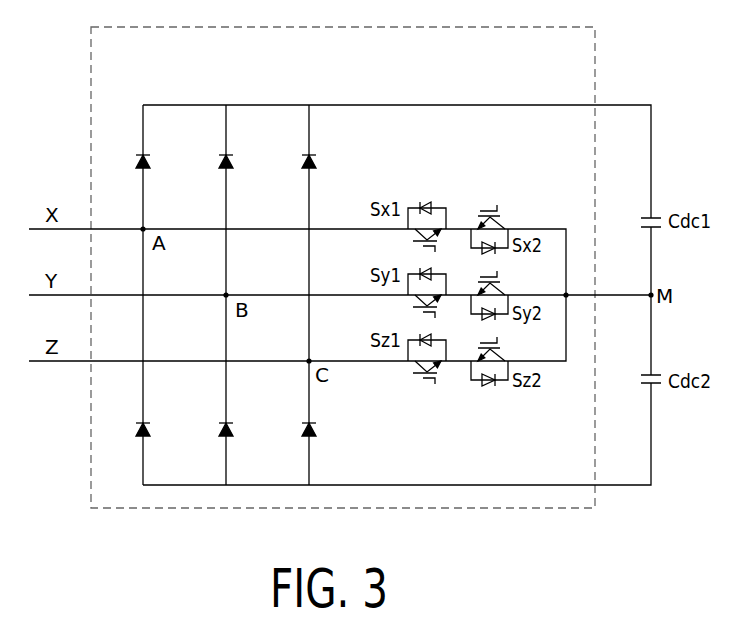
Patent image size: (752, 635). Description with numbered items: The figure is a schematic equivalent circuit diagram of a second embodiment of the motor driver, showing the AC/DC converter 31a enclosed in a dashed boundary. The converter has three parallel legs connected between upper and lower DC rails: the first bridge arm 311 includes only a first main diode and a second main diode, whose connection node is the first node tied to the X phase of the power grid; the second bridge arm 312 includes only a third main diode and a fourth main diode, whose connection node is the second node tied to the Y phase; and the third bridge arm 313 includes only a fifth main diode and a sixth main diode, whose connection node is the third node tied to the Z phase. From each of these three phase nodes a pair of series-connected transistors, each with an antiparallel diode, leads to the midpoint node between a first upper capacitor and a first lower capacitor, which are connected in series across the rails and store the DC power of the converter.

The AC/DC converter 31a is at (598, 54).
The first bridge arm 311 is at (148, 93).
The second bridge arm 312 is at (231, 93).
The third bridge arm 313 is at (314, 93).